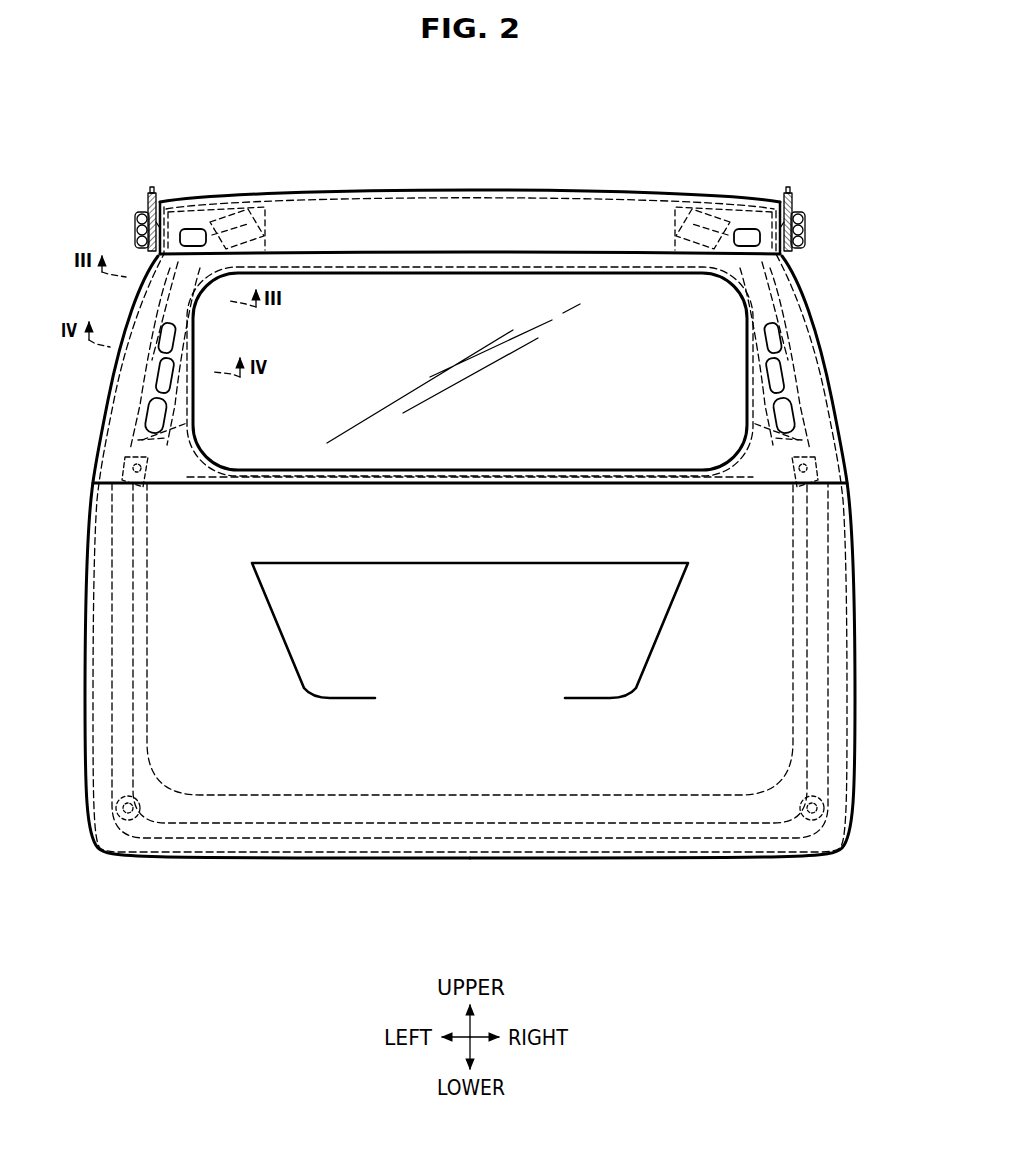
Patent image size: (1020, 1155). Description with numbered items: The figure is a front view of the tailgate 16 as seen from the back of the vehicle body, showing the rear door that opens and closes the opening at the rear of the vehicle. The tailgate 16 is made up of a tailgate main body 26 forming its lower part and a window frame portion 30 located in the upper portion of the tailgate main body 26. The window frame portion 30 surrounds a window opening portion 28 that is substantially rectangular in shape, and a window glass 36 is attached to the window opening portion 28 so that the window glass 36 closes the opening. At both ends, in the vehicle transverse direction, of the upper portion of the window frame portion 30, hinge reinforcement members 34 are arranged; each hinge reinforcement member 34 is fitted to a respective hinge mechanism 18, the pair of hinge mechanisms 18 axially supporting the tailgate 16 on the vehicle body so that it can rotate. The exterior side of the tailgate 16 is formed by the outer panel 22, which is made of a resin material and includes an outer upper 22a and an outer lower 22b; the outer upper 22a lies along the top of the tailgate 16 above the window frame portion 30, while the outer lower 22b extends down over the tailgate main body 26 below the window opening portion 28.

The tailgate 16 is at (351, 176).
The hinge mechanism 18 is at (145, 195).
The outer panel 22 is at (652, 148).
The outer upper 22a is at (531, 224).
The outer lower 22b is at (585, 515).
The tailgate main body 26 is at (460, 740).
The window opening portion 28 is at (747, 432).
The window frame portion 30 is at (150, 307).
The hinge reinforcement member 34 is at (143, 373).
The window glass 36 is at (425, 328).